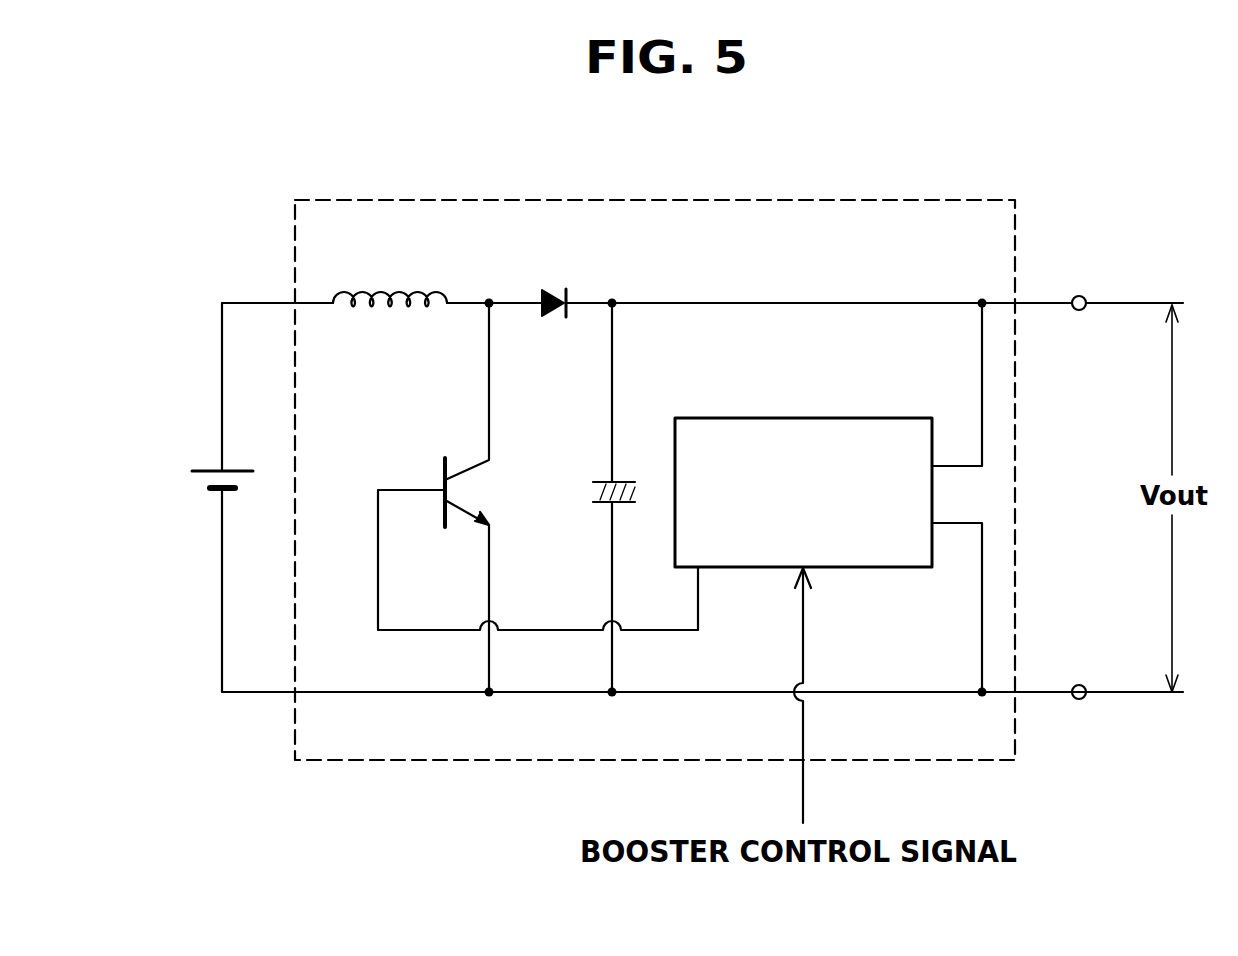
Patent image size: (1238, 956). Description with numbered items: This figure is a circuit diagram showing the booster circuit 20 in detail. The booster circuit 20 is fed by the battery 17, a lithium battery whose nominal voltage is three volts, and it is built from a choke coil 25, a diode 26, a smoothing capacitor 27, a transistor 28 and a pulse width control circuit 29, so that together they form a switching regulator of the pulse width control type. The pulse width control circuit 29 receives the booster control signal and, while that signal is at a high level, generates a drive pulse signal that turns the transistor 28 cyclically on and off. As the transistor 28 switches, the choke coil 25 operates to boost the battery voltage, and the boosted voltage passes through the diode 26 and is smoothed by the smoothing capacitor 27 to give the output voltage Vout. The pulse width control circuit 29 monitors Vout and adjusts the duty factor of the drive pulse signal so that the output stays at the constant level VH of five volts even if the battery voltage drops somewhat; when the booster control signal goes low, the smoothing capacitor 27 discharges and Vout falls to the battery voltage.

The battery 17 is at (210, 470).
The booster circuit 20 is at (864, 200).
The choke coil 25 is at (393, 293).
The diode 26 is at (558, 290).
The smoothing capacitor 27 is at (606, 480).
The transistor 28 is at (440, 470).
The pulse width control circuit 29 is at (804, 418).